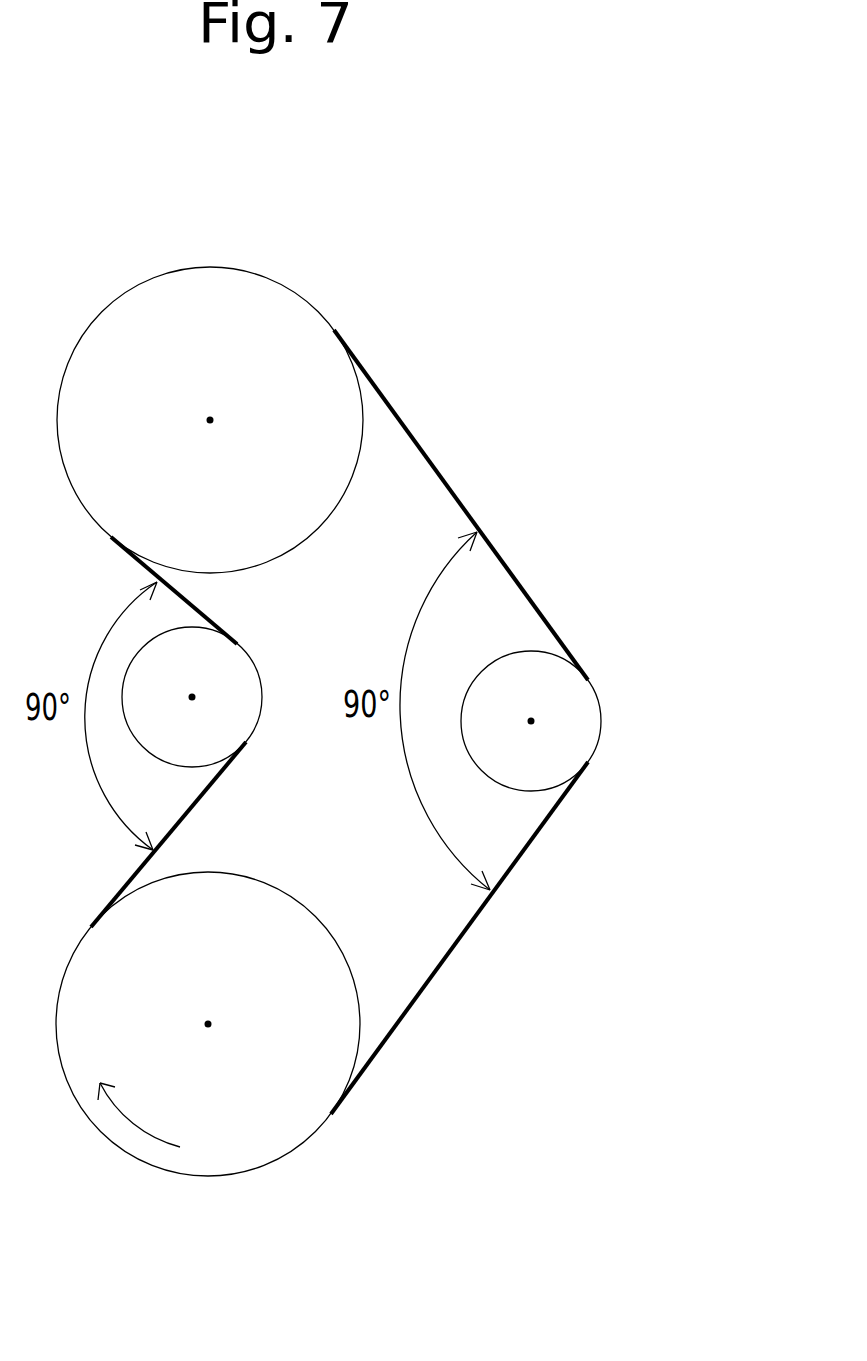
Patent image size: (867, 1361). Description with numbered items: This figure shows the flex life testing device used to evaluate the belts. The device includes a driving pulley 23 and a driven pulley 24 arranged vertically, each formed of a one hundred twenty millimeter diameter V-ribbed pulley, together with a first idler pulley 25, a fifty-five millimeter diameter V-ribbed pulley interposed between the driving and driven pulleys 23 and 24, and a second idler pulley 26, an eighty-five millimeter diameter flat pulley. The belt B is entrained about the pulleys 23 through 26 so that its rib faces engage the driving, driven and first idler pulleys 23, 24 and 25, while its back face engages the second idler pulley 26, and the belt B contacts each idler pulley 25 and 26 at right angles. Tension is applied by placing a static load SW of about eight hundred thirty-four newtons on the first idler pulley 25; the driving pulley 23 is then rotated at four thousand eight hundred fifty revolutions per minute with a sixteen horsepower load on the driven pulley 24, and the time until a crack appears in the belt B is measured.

The driving pulley 23 is at (215, 1160).
The driven pulley 24 is at (127, 308).
The first idler pulley 25 is at (563, 748).
The second idler pulley 26 is at (237, 663).
The belt B is at (430, 982).
The static load SW is at (531, 721).